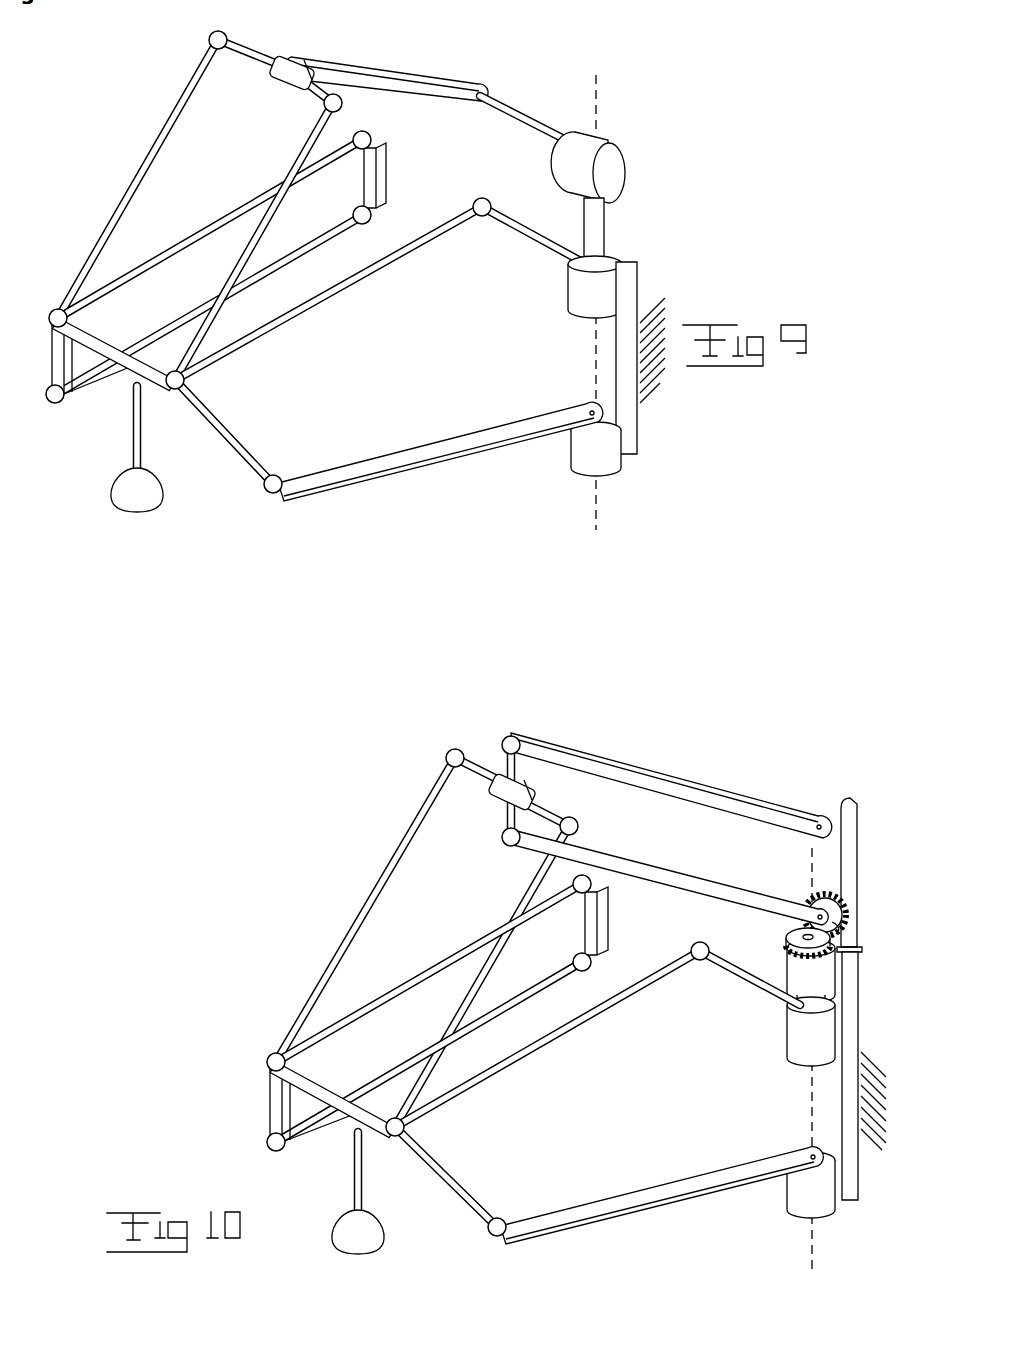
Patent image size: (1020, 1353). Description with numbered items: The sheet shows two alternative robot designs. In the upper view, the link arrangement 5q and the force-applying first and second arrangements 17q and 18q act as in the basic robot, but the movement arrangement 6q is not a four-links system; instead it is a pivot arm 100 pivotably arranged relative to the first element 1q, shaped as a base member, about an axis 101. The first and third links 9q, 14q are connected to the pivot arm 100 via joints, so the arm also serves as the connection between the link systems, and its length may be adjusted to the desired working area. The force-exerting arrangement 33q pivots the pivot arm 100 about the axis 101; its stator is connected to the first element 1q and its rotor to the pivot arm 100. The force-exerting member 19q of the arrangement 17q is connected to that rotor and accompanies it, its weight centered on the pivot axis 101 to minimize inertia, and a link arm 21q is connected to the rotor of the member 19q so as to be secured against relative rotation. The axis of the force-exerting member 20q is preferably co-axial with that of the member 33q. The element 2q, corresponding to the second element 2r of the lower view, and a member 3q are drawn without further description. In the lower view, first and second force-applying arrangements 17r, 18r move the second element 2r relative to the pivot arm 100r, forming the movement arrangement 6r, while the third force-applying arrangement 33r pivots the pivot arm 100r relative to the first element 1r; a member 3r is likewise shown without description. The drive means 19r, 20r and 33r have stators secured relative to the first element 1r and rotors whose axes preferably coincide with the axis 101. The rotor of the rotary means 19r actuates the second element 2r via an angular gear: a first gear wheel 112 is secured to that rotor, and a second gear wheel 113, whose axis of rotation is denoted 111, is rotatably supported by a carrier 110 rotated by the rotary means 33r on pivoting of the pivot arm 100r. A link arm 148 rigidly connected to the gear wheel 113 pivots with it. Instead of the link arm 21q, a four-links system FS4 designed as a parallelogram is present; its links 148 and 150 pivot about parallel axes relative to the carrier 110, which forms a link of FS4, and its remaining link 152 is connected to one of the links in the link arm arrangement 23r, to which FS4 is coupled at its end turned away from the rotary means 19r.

In FIG. 9, the first element 1q is at (633, 306).
In FIG. 9, the vertical post of base frame 2q is at (62, 364).
In FIG. 9, the pendant weight / handle 3q is at (143, 502).
In FIG. 9, the link arrangement 5q is at (357, 300).
In FIG. 9, the movement arrangement 6q is at (505, 250).
In FIG. 9, the first link 9q is at (146, 264).
In FIG. 9, the third link 14q is at (286, 330).
In FIG. 9, the first force-applying arrangement 17q is at (146, 101).
In FIG. 9, the second force-applying arrangement 18q is at (418, 496).
In FIG. 9, the force-exerting member 19q is at (601, 142).
In FIG. 9, the force-exerting member 20q is at (601, 454).
In FIG. 9, the link arm 21q is at (386, 80).
In FIG. 9, the force-exerting arrangement 33q is at (610, 264).
In FIG. 9, the pivot arm 100 is at (527, 211).
In FIG. 9, the axis 101 is at (594, 343).
In FIG. 10, the axis 101 is at (810, 1108).
In FIG. 10, the first element 1r is at (850, 1050).
In FIG. 10, the second element 2r is at (276, 1103).
In FIG. 10, the pendant weight / handle 3r is at (358, 1193).
In FIG. 10, the movement arrangement 6r is at (710, 988).
In FIG. 10, the first force-applying arrangement 17r is at (327, 908).
In FIG. 10, the second force-applying arrangement 18r is at (652, 1239).
In FIG. 10, the rotary means 19r is at (794, 976).
In FIG. 10, the drive means 20r is at (803, 1201).
In FIG. 10, the link arm arrangement 23r is at (340, 947).
In FIG. 10, the rotary means 33r is at (800, 1050).
In FIG. 10, the pivot arm 100r is at (760, 961).
In FIG. 10, the carrier 110 is at (851, 856).
In FIG. 10, the axis of rotation 111 is at (828, 892).
In FIG. 10, the first gear wheel 112 is at (803, 928).
In FIG. 10, the second gear wheel 113 is at (840, 925).
In FIG. 10, the link arm 148 is at (652, 882).
In FIG. 10, the link 150 is at (637, 778).
In FIG. 10, the link 152 is at (504, 764).
In FIG. 10, the four-links system FS4 is at (709, 751).